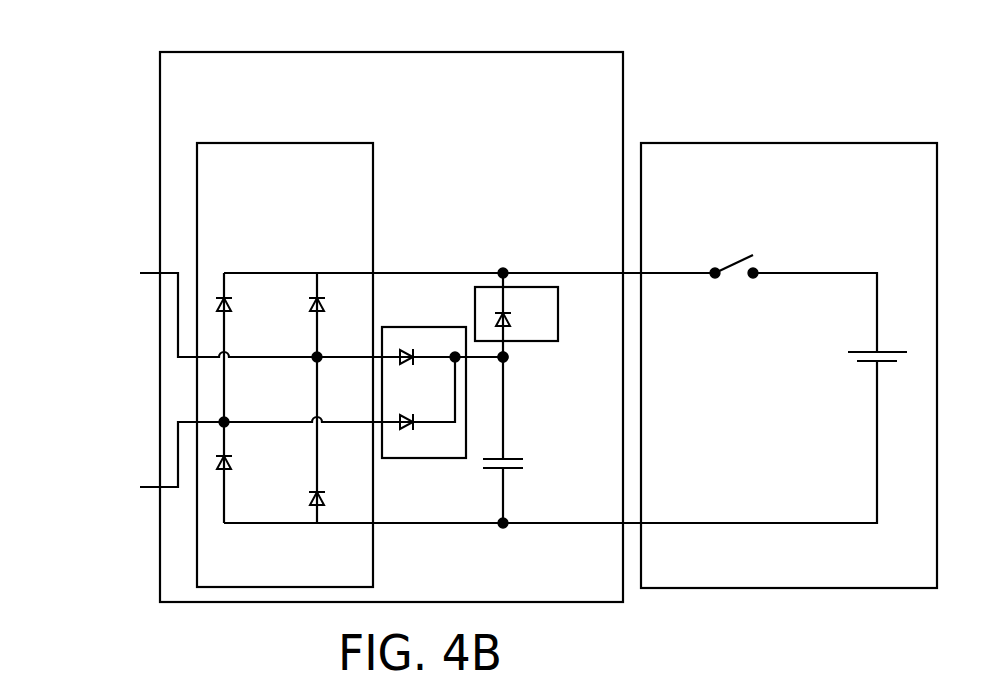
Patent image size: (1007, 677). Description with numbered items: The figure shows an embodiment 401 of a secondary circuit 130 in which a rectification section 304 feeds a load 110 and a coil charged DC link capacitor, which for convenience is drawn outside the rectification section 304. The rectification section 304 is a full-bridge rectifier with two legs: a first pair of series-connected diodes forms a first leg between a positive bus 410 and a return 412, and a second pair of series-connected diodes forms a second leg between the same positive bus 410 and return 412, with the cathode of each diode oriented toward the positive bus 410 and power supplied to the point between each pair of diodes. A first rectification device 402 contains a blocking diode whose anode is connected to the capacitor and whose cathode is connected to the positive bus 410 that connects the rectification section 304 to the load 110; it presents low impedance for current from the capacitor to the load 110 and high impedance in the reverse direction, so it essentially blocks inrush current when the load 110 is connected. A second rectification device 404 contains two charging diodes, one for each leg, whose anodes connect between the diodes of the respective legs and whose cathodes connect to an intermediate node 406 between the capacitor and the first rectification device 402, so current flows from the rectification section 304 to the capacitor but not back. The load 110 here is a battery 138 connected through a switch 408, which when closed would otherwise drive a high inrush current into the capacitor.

The embodiment 401 is at (112, 46).
The secondary circuit 130 is at (409, 116).
The rectification section 304 is at (302, 236).
The first rectification device 402 is at (558, 322).
The second rectification device 404 is at (428, 458).
The intermediate node 406 is at (508, 357).
The positive bus 410 is at (528, 273).
The return 412 is at (552, 523).
The load 110 is at (810, 209).
The switch 408 is at (734, 295).
The battery 138 is at (849, 388).